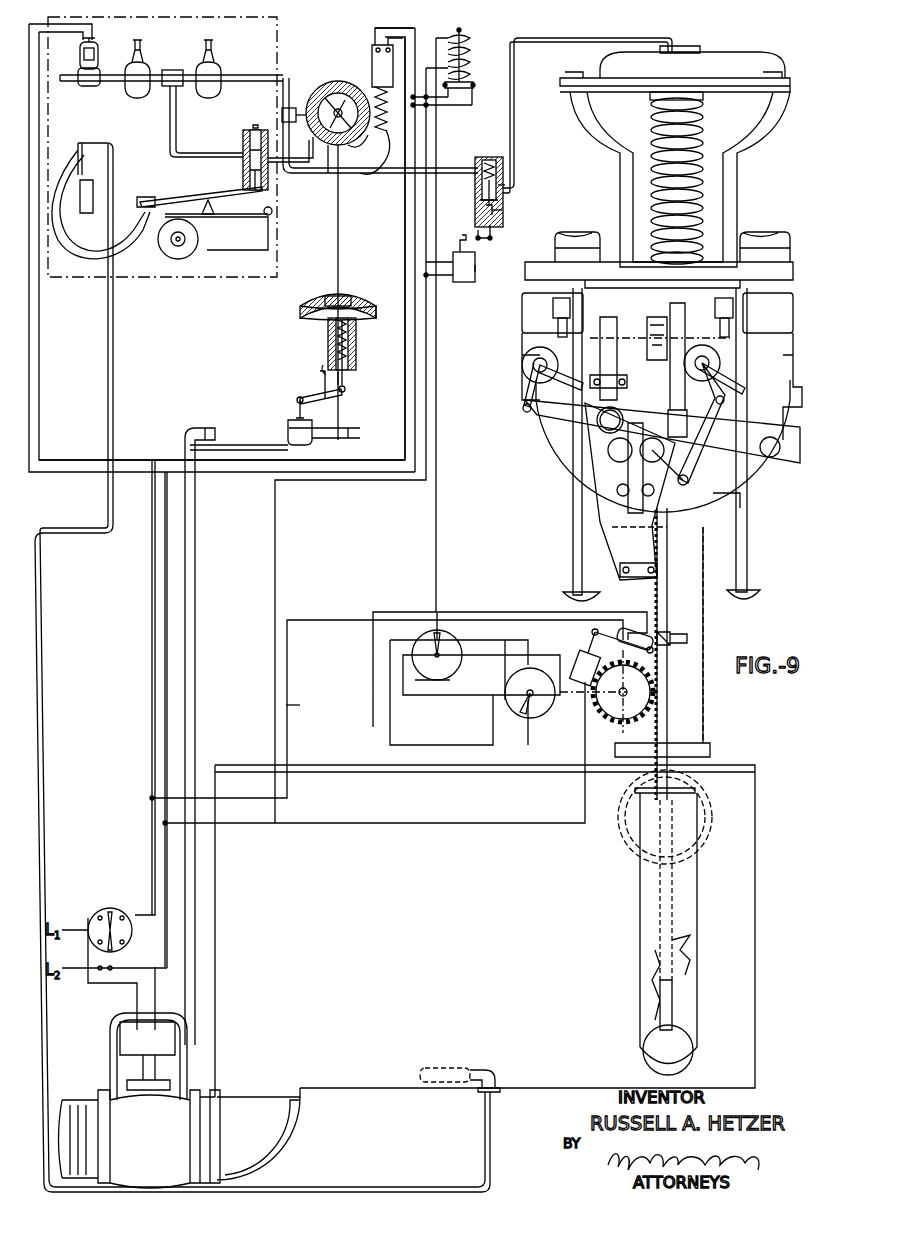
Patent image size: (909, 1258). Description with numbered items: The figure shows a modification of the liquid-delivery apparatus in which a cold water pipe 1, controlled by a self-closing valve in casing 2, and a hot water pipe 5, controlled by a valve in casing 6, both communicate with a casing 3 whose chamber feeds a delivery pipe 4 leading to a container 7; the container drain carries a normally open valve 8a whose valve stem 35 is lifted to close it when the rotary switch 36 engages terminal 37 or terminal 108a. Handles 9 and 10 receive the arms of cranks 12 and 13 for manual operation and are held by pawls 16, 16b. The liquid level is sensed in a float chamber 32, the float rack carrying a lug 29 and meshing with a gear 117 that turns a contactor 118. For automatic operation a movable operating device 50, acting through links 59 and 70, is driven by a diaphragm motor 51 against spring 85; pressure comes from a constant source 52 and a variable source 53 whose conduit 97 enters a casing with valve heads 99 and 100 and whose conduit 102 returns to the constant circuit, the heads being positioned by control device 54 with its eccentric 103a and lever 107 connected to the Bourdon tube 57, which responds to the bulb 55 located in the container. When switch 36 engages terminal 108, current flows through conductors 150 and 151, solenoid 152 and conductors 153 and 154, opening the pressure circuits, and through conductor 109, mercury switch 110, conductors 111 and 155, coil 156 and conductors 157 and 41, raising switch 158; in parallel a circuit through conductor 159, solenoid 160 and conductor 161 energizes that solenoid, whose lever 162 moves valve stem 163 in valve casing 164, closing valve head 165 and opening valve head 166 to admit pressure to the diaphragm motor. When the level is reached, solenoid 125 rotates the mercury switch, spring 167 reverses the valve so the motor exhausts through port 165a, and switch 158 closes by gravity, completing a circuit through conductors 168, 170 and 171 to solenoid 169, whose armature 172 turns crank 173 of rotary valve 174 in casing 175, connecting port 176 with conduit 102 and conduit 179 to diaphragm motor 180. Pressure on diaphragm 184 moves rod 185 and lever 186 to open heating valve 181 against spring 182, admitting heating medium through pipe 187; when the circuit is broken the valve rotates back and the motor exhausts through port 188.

The cold water pipe 1 is at (766, 240).
The valve casing 2 is at (775, 352).
The casing 3 is at (548, 452).
The delivery pipe 4 is at (704, 553).
The hot water pipe 5 is at (592, 240).
The valve casing 6 is at (522, 346).
The container 7 is at (752, 915).
The drain valve 8a is at (180, 1130).
The handle 9 is at (749, 545).
The handle 10 is at (573, 554).
The crank 12 is at (740, 372).
The crank 13 is at (535, 368).
The pawl 16 is at (560, 300).
The guide 16b is at (748, 300).
The lug 29 is at (671, 636).
The float chamber 32 is at (640, 927).
The valve stem 35 is at (143, 1068).
The rotary switch 36 is at (104, 912).
The terminal 37 is at (98, 918).
The conductor 41 is at (168, 925).
The operating device 50 is at (640, 470).
The diaphragm motor 51 is at (718, 68).
The constant pressure circuit 52 is at (165, 62).
The variable pressure circuit 53 is at (218, 138).
The control device 54 is at (237, 262).
The bulb 55 is at (444, 1066).
The Bourdon tube 57 is at (100, 256).
The link 59 is at (715, 416).
The link 70 is at (545, 410).
The spring 85 is at (700, 166).
The conduit 97 is at (170, 118).
The valve head 99 is at (255, 130).
The valve head 100 is at (248, 182).
The conduit 102 is at (287, 168).
The eccentric 103a is at (182, 260).
The lever 107 is at (170, 201).
The terminal 108 is at (133, 905).
The terminal 108a is at (106, 952).
The conductor 109 is at (312, 705).
The mercury switch 110 is at (624, 636).
The conductor 111 is at (513, 612).
The gear 117 is at (602, 706).
The contactor 118 is at (528, 718).
The solenoid 125 is at (580, 655).
The conductor 150 is at (151, 710).
The conductor 151 is at (41, 376).
The solenoid 152 is at (100, 50).
The conductor 153 is at (75, 472).
The conductor 154 is at (150, 600).
The conductor 155 is at (438, 390).
The coil 156 is at (470, 40).
The conductor 157 is at (363, 472).
The switch 158 is at (472, 84).
The conductor 159 is at (455, 278).
The solenoid 160 is at (476, 278).
The conductor 161 is at (440, 262).
The lever 162 is at (462, 238).
The valve stem 163 is at (494, 238).
The valve casing 164 is at (500, 186).
The valve head 165 is at (500, 200).
The exhaust port 165a is at (503, 210).
The valve head 166 is at (505, 182).
The spring 167 is at (488, 156).
The conductor 168 is at (397, 460).
The solenoid 169 is at (374, 52).
The conductor 170 is at (415, 40).
The conductor 171 is at (244, 473).
The armature 172 is at (376, 100).
The crank 173 is at (379, 160).
The rotary valve 174 is at (330, 80).
The casing 175 is at (302, 86).
The port 176 is at (328, 166).
The conduit 179 is at (340, 231).
The diaphragm motor 180 is at (318, 304).
The valve 181 is at (288, 415).
The spring 182 is at (350, 344).
The diaphragm 184 is at (357, 305).
The rod 185 is at (346, 380).
The lever 186 is at (338, 392).
The pipe 187 is at (338, 437).
The exhaust port 188 is at (358, 150).